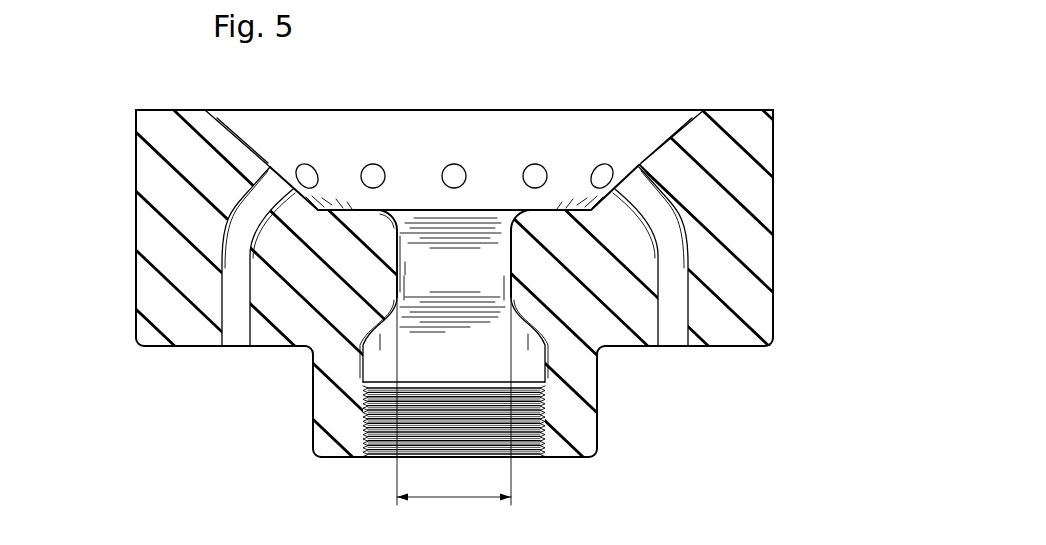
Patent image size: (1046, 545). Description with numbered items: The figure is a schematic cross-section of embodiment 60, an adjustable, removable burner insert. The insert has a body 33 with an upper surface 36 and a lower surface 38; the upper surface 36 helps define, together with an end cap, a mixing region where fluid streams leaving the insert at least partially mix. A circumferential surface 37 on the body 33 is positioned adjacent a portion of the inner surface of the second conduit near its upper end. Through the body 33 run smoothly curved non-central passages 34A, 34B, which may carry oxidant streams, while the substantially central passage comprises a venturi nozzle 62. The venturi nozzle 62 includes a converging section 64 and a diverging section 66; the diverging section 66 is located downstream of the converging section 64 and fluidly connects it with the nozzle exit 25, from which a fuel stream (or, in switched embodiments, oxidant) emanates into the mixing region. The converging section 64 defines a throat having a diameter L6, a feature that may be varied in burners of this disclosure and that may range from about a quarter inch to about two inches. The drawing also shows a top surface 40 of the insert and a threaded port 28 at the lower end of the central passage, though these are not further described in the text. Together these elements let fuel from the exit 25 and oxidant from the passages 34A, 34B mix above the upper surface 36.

The embodiment of adjustable, removable burner component 60 is at (706, 66).
The top surface 40 is at (183, 109).
The upper surface 36 is at (242, 134).
The circumferential surface 37 is at (136, 161).
The body 33 is at (760, 152).
The exit 25 is at (493, 207).
The diverging section 66 is at (392, 213).
The converging section 64 is at (398, 257).
The venturi nozzle 62 is at (402, 305).
The lower surface 38 is at (188, 346).
The smoothly curved non-central passage 34A is at (244, 332).
The smoothly curved non-central passage 34B is at (686, 335).
The threaded port 28 is at (383, 455).
The throat diameter L6 is at (454, 384).